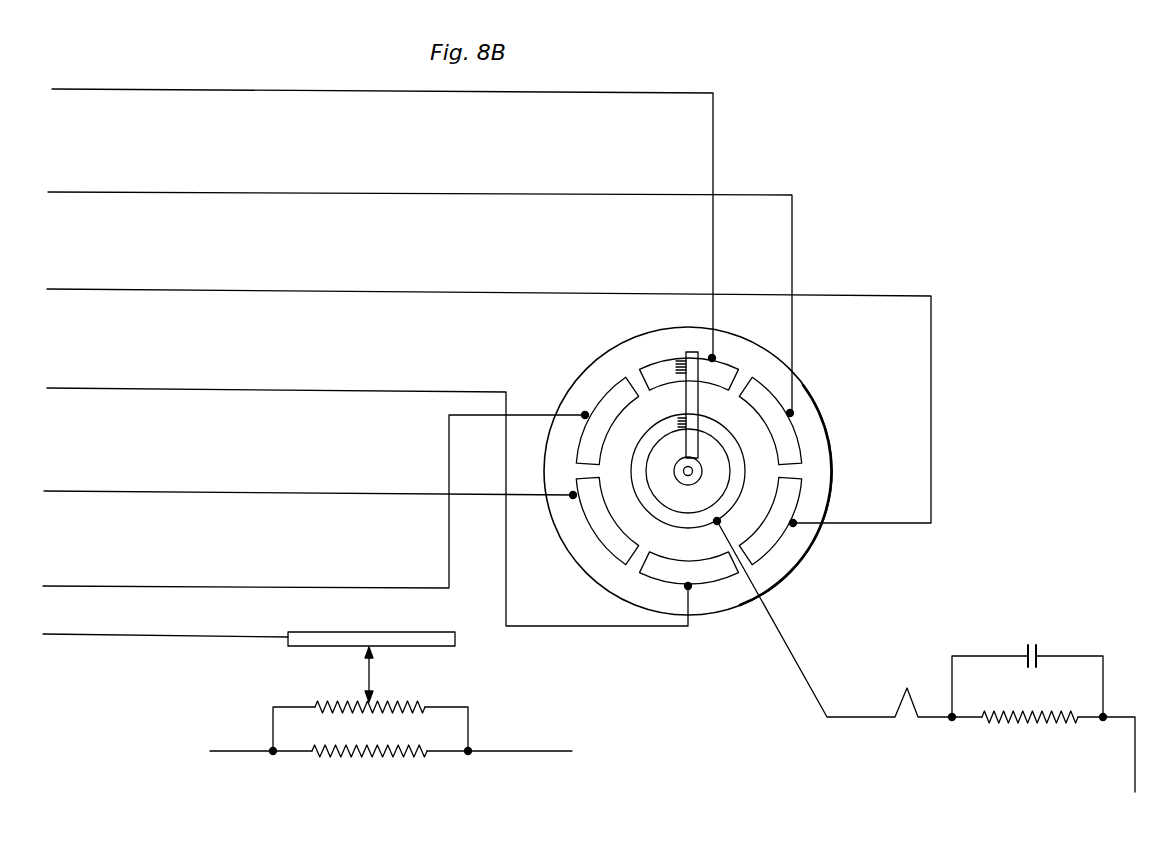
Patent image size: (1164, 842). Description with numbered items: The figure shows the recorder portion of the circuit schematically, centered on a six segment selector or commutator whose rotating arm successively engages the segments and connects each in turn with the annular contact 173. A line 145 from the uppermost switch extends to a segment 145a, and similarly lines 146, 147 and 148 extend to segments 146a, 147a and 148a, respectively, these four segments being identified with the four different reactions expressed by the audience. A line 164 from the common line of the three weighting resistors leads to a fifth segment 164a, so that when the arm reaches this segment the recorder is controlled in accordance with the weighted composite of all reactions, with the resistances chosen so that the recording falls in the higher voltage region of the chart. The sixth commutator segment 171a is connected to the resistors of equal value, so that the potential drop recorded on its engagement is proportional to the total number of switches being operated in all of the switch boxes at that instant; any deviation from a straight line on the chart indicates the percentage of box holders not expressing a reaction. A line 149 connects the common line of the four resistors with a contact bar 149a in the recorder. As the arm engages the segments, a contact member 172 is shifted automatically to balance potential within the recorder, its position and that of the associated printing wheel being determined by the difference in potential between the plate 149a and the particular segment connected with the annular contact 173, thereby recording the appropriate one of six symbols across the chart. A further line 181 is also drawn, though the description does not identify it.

The line 145 is at (317, 67).
The line 146 is at (303, 192).
The line 147 is at (303, 289).
The line 148 is at (293, 388).
The line 164 is at (128, 473).
The conductor 181 is at (128, 563).
The line 149 is at (118, 623).
The contact bar 149a is at (410, 622).
The contact member 172 is at (373, 672).
The segment 171a is at (615, 395).
The segment 145a is at (718, 368).
The segment 146a is at (788, 437).
The segment 147a is at (792, 493).
The fifth segment 164a is at (600, 533).
The segment 148a is at (720, 597).
The annular contact 173 is at (713, 433).